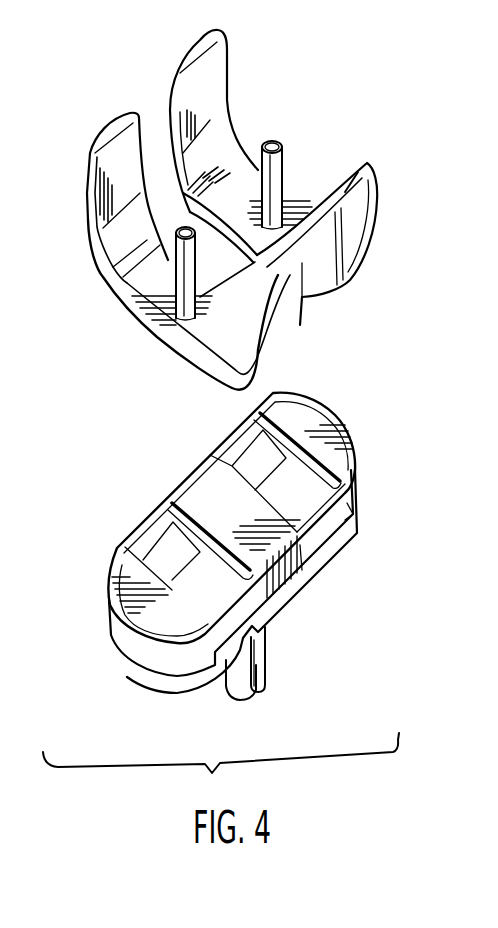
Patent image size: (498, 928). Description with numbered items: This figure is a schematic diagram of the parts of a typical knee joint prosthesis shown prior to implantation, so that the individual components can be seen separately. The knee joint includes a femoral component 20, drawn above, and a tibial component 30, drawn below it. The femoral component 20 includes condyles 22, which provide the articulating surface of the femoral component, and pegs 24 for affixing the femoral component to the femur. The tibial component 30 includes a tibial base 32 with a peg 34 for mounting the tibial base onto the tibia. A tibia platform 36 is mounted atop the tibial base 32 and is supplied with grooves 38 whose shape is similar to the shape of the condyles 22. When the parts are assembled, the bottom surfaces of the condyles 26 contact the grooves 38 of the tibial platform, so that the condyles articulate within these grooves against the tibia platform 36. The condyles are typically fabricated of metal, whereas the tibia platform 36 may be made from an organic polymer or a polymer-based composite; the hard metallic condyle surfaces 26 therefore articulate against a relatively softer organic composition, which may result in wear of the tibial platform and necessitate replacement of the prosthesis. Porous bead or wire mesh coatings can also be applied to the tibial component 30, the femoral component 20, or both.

The femoral component 20 is at (296, 81).
The condyles 22 is at (223, 52).
The pegs 24 is at (285, 165).
The bottom surfaces of the condyles 26 is at (143, 340).
The tibial component 30 is at (342, 385).
The tibial base 32 is at (127, 673).
The peg 34 is at (265, 650).
The tibia platform 36 is at (113, 635).
The grooves 38 is at (240, 445).